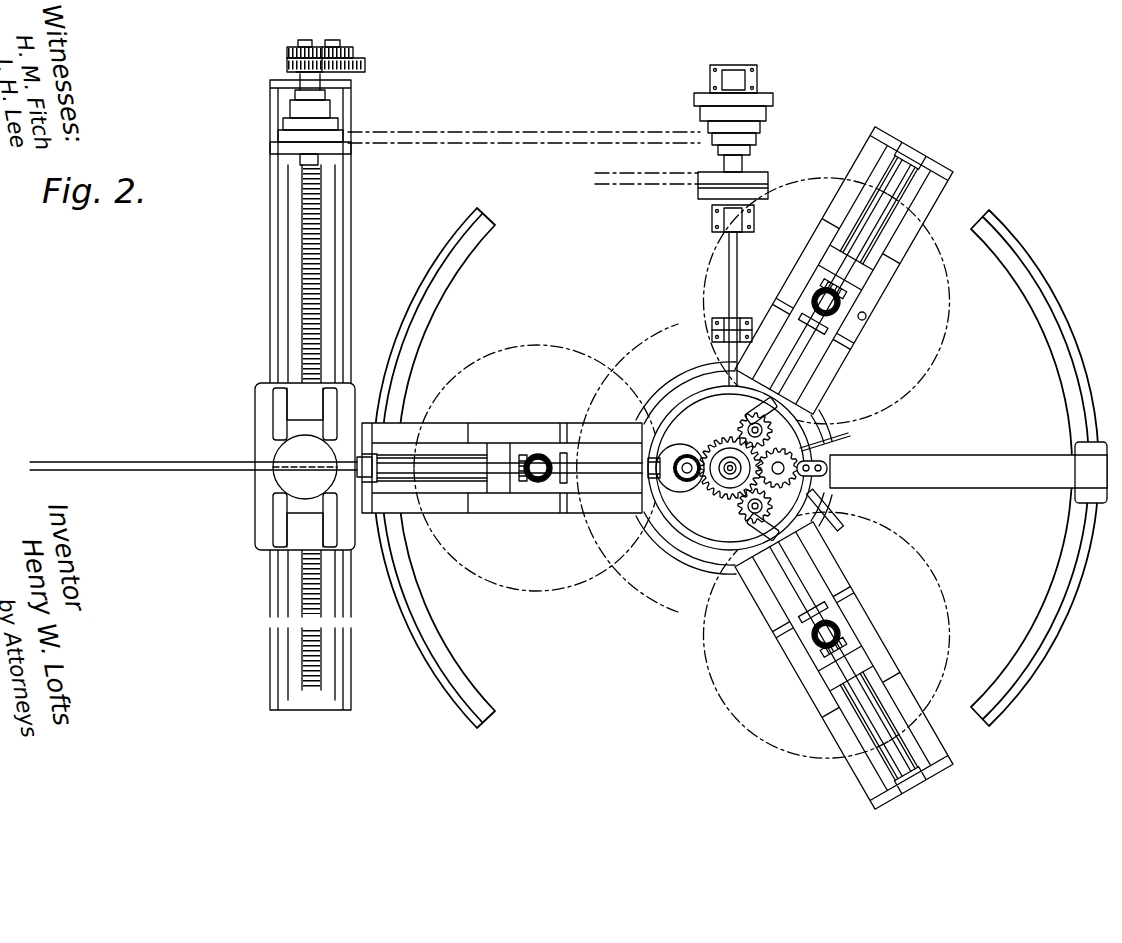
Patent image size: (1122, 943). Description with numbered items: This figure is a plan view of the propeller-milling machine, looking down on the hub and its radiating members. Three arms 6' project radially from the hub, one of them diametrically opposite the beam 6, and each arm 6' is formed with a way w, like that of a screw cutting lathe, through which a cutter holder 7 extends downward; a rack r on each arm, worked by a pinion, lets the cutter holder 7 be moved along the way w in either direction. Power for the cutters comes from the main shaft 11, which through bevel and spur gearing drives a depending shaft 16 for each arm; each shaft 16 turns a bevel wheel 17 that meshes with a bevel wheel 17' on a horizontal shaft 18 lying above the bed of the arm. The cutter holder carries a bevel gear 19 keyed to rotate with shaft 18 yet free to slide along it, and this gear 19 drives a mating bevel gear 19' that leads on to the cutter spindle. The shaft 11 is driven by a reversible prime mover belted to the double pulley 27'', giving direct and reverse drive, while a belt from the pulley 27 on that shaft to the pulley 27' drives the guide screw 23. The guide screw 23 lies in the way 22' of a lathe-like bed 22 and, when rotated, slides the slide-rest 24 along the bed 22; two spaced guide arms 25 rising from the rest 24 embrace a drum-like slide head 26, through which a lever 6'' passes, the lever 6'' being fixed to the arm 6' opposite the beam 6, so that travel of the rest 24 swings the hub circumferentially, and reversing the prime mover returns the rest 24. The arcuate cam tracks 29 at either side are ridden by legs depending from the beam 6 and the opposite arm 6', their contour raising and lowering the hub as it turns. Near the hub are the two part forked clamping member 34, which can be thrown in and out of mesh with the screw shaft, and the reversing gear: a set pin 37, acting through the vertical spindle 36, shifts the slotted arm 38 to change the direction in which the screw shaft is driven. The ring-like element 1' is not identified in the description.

The ring frame 1' is at (734, 473).
The beam 6 is at (968, 465).
The arm 6' is at (662, 468).
The lever 6'' is at (201, 480).
The cutter holder 7 is at (536, 487).
The main shaft 11 is at (728, 283).
The depending shaft 16 is at (645, 430).
The bevel wheel 17 is at (679, 495).
The bevel wheel 17' is at (790, 493).
The horizontal shaft 18 is at (460, 470).
The bevel gear 19 is at (716, 457).
The bevel gear 19' is at (684, 450).
The bed 22 is at (285, 395).
The way 22' is at (348, 427).
The guide screw 23 is at (280, 250).
The slide-rest 24 is at (258, 545).
The guide arm 25 is at (272, 408).
The slide head 26 is at (272, 455).
The pulley 27 is at (745, 118).
The pulley 27' is at (290, 103).
The double pulley 27'' is at (718, 198).
The cam track 29 is at (1058, 590).
The two part forked clamping member 34 is at (838, 522).
The vertical spindle 36 is at (778, 476).
The set pin 37 is at (830, 469).
The slotted arm 38 is at (852, 436).
The rack r is at (866, 317).
The way w is at (606, 482).